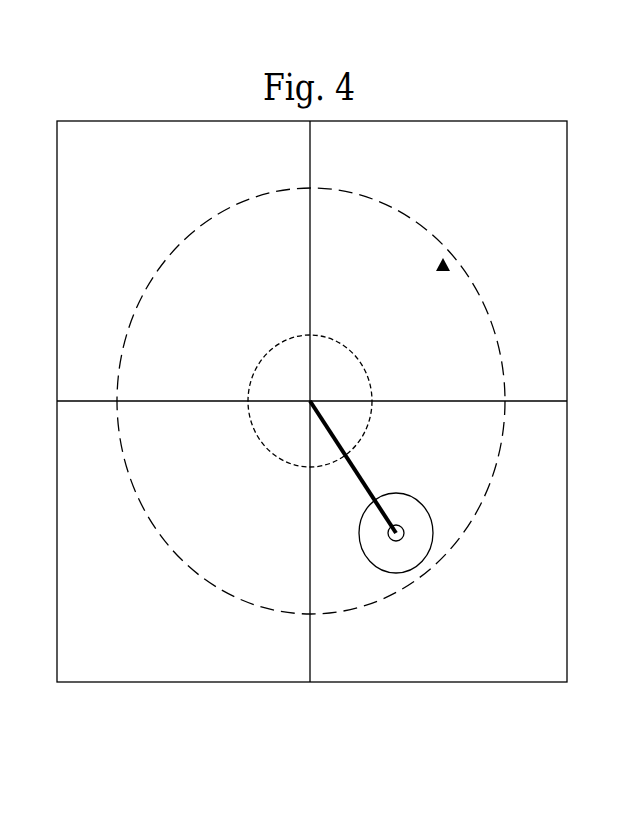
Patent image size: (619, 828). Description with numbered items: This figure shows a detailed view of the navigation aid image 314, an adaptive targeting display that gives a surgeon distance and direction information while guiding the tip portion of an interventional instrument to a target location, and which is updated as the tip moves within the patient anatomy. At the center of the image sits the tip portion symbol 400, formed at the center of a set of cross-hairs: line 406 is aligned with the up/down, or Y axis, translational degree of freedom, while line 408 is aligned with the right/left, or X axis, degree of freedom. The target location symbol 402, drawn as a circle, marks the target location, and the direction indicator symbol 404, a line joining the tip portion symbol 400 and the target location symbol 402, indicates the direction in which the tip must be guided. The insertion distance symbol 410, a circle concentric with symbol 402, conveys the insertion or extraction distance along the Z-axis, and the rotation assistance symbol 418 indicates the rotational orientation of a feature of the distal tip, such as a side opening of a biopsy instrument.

The navigation aid image 314 is at (181, 115).
The tip portion symbol 400 is at (308, 398).
The target location symbol 402 is at (397, 542).
The direction indicator symbol 404 is at (362, 480).
The cross-hair line 406 is at (310, 162).
The cross-hair line 408 is at (523, 403).
The insertion distance symbol 410 is at (418, 500).
The rotation assistance symbol 418 is at (438, 265).